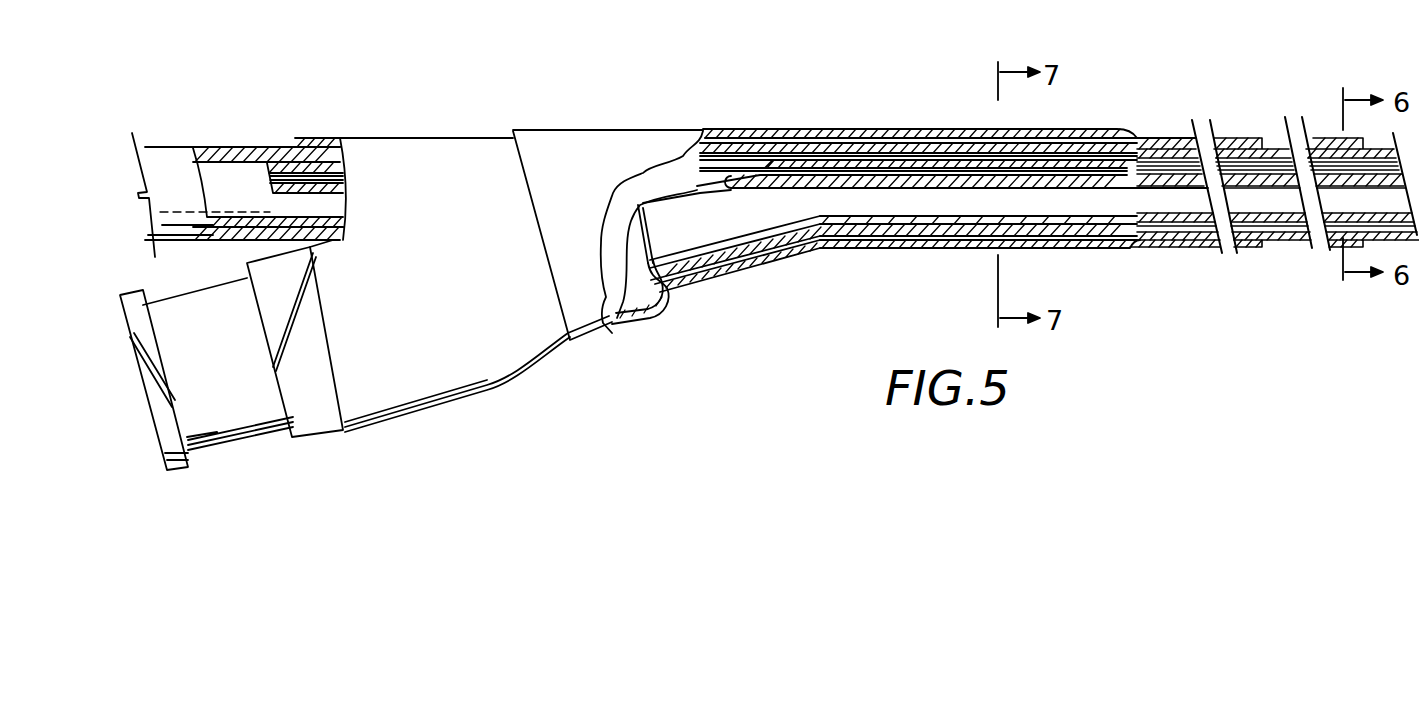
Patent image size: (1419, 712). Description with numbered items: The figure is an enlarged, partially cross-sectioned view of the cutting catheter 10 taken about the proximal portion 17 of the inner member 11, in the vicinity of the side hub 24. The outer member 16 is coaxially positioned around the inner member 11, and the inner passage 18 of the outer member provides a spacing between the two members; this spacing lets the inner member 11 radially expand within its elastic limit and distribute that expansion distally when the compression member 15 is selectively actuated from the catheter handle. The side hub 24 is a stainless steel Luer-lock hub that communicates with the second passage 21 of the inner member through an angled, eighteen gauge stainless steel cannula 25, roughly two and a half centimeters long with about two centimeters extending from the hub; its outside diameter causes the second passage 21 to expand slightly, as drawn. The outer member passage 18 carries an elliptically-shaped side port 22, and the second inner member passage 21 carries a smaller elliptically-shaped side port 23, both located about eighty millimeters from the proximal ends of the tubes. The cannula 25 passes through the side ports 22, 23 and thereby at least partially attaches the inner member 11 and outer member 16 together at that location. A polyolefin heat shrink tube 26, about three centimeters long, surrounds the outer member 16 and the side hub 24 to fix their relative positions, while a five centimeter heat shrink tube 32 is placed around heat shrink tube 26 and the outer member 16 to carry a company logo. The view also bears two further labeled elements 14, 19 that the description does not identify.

The cutting catheter 10 is at (732, 30).
The inner member 11 is at (1133, 160).
The conductor layer 14 is at (1160, 167).
The compression member 15 is at (1233, 172).
The outer member 16 is at (1083, 147).
The proximal portion 17 is at (782, 37).
The inner passage of outer member 18 is at (1053, 160).
The break lines 19 is at (1335, 249).
The second passage of inner member 21 is at (1178, 207).
The side port 22 is at (793, 225).
The side port 23 is at (692, 215).
The side hub 24 is at (303, 418).
The cannula 25 is at (677, 247).
The heat shrink tube 26 is at (427, 393).
The heat shrink tube 32 is at (590, 337).